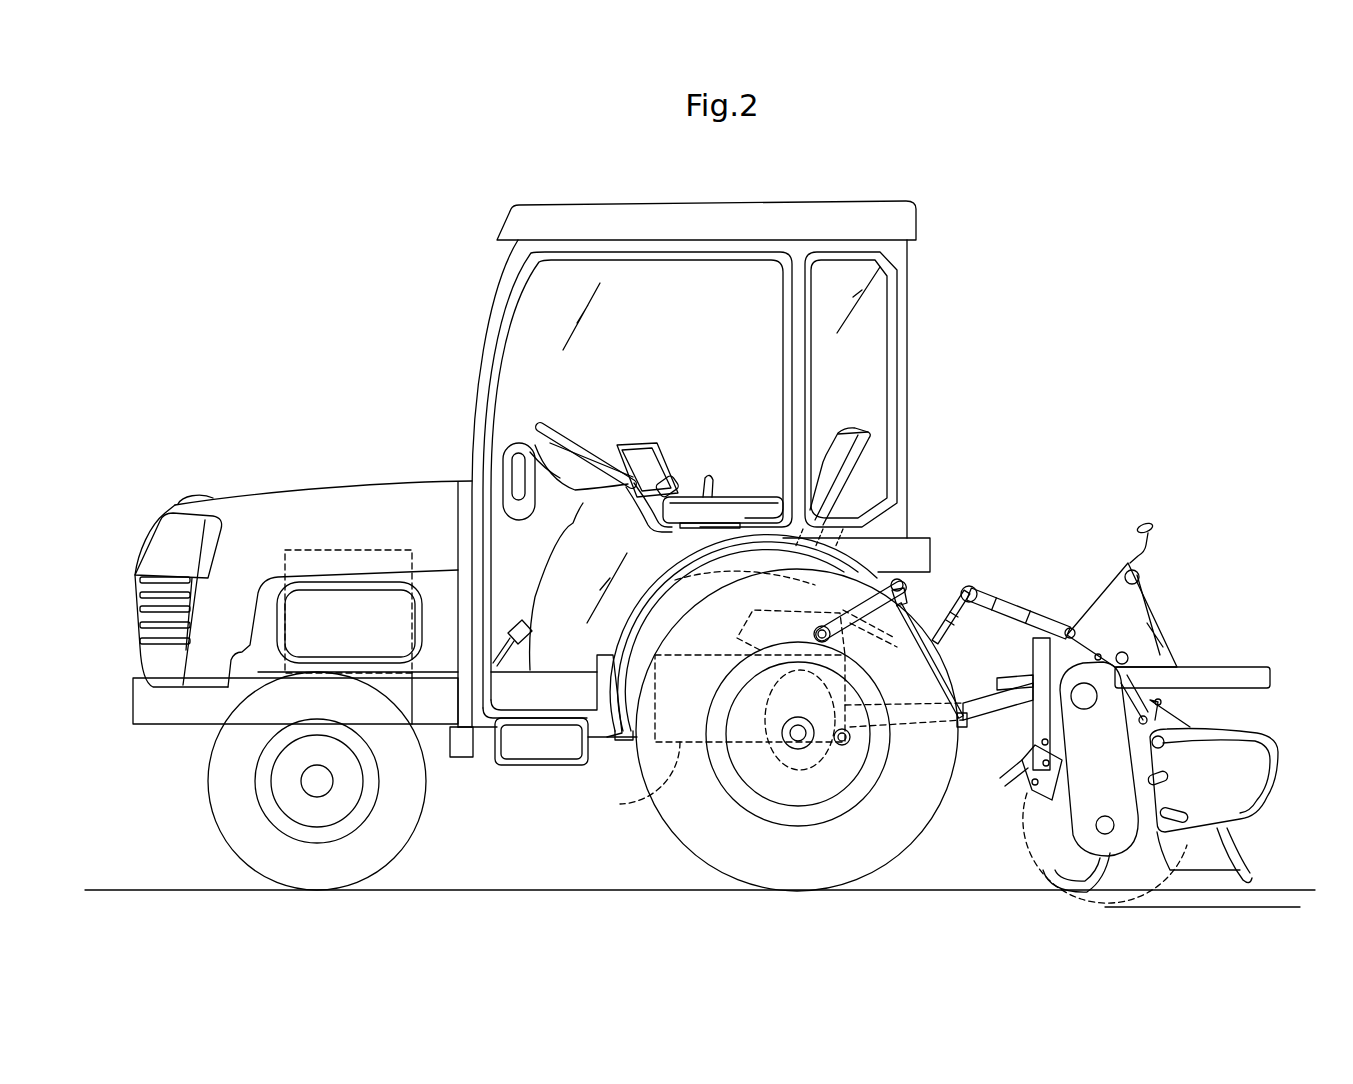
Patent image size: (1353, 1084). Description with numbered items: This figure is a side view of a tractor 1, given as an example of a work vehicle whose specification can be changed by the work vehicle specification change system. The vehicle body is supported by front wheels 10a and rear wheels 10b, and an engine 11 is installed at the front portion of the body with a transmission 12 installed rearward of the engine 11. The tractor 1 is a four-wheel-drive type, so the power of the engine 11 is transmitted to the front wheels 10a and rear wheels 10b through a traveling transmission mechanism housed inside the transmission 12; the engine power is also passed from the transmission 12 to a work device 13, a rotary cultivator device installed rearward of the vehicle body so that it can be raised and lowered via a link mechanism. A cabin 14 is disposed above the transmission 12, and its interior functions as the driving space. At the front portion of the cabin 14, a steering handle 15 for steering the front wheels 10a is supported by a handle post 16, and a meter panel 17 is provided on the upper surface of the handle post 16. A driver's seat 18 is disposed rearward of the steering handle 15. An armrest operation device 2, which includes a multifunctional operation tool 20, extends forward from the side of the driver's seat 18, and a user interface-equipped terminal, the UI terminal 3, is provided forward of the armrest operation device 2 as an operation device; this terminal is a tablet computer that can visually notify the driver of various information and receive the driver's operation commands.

The tractor 1 is at (147, 743).
The armrest operation device 2 is at (753, 487).
The UI terminal 3 is at (647, 463).
The front wheels 10a is at (235, 850).
The rear wheels 10b is at (685, 847).
The engine 11 is at (340, 550).
The transmission 12 is at (640, 792).
The work device 13 is at (1221, 566).
The cabin 14 is at (510, 295).
The steering handle 15 is at (578, 443).
The handle post 16 is at (573, 525).
The meter panel 17 is at (560, 483).
The driver's seat 18 is at (855, 423).
The multifunctional operation tool 20 is at (678, 493).